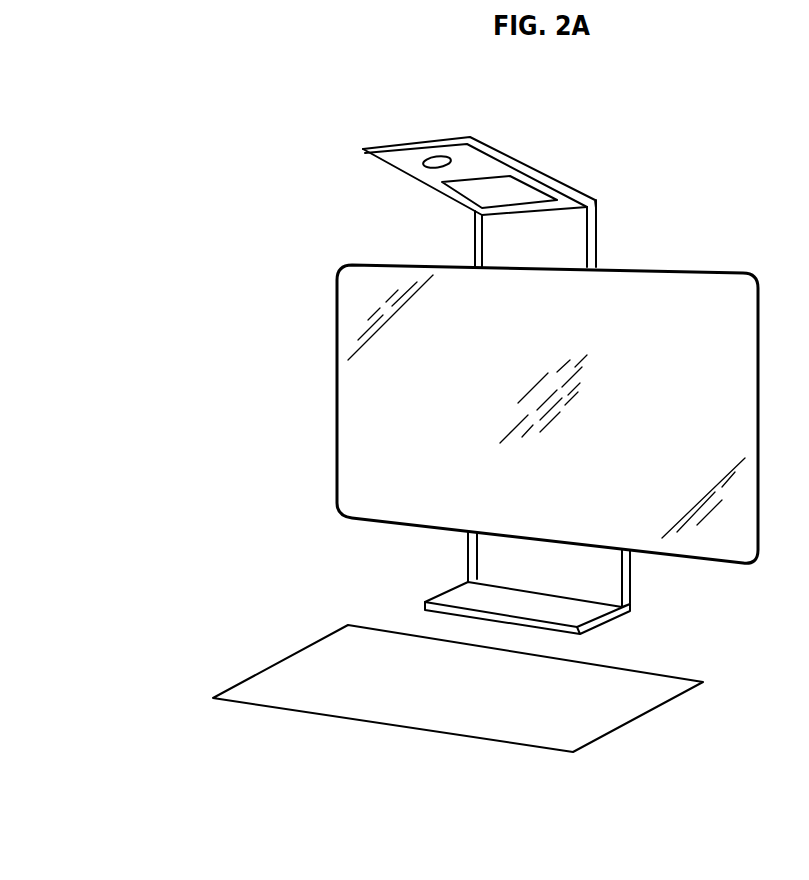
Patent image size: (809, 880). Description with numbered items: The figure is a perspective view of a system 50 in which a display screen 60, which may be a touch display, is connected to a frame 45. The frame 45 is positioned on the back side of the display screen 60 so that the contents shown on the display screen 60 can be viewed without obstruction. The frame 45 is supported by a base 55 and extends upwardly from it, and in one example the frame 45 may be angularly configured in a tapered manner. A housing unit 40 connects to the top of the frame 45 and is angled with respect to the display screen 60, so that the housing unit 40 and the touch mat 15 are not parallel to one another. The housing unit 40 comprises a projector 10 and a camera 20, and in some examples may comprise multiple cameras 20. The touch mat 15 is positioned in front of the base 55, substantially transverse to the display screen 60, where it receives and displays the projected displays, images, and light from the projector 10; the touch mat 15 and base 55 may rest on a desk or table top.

The system 50 is at (178, 224).
The display screen 60 is at (708, 272).
The housing unit 40 is at (562, 182).
The projector 10 is at (522, 173).
The camera 20 is at (432, 160).
The frame 45 is at (475, 250).
The base 55 is at (512, 582).
The touch mat 15 is at (642, 670).